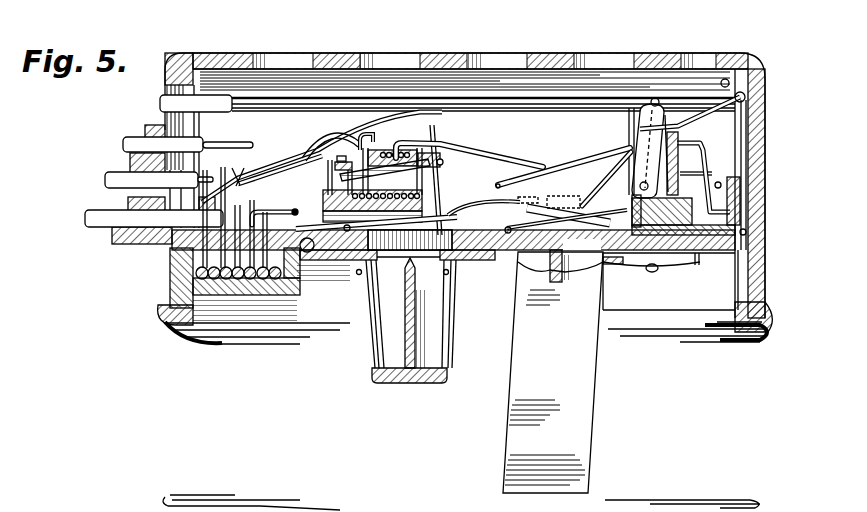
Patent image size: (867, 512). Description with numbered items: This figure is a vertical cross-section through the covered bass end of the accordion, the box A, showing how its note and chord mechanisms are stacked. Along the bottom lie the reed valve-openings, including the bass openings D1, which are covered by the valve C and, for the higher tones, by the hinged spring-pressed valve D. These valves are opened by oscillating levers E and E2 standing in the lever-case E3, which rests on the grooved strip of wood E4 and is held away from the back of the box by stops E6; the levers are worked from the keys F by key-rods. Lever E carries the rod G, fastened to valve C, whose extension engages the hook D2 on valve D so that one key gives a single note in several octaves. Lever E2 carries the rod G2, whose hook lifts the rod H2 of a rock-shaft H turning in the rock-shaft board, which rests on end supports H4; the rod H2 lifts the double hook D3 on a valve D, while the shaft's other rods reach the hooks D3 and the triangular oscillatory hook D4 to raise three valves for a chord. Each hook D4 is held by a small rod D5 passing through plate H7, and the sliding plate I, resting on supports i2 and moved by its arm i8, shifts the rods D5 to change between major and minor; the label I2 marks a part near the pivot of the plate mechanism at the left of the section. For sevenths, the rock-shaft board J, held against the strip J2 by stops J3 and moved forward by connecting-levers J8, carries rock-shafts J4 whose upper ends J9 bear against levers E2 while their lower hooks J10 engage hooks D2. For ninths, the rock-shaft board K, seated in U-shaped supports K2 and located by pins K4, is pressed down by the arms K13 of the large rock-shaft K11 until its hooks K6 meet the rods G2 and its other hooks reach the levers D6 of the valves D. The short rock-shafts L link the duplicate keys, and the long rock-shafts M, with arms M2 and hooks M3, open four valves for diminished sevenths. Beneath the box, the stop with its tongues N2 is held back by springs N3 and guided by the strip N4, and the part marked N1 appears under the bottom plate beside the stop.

The box A is at (767, 175).
The valve C is at (590, 212).
The valve D is at (381, 226).
The valve-openings D1 is at (453, 239).
The hook D2 is at (533, 197).
The double hook D3 is at (437, 170).
The triangular oscillatory hook D4 is at (437, 133).
The small rod D5 is at (345, 150).
The lever D6 is at (296, 228).
The oscillating lever E is at (657, 114).
The oscillating lever E2 is at (628, 118).
The lever-case E3 is at (785, 142).
The strip of wood E4 is at (760, 253).
The stop E6 is at (690, 114).
The key F is at (160, 102).
The rod G is at (605, 177).
The rod G2 is at (575, 160).
The rock-shaft H is at (422, 200).
The rod H2 is at (487, 168).
The end support H4 is at (467, 252).
The small plate H7 is at (330, 190).
The sliding plate I is at (305, 153).
The pivot I2 is at (223, 215).
The support i2 is at (312, 150).
The arm i8 is at (280, 169).
The rock-shaft board J is at (750, 192).
The strip of wood J2 is at (750, 230).
The stop J3 is at (697, 163).
The rock-shaft J4 is at (747, 204).
The connecting-lever J8 is at (750, 94).
The upper end J9 is at (707, 155).
The hook J10 is at (507, 233).
The rock-shaft board K is at (378, 150).
The U-shaped support K2 is at (443, 160).
The pin K4 is at (393, 182).
The hook K6 is at (469, 149).
The rock-shaft K11 is at (308, 262).
The arm K13 is at (347, 151).
The pin h is at (368, 135).
The short rock-shaft L is at (226, 280).
The long rock-shaft M is at (260, 280).
The arm M2 is at (312, 262).
The hook M3 is at (258, 197).
The guide N1 is at (702, 255).
The tongue N2 is at (643, 267).
The spring N3 is at (667, 268).
The strip of wood N4 is at (602, 280).